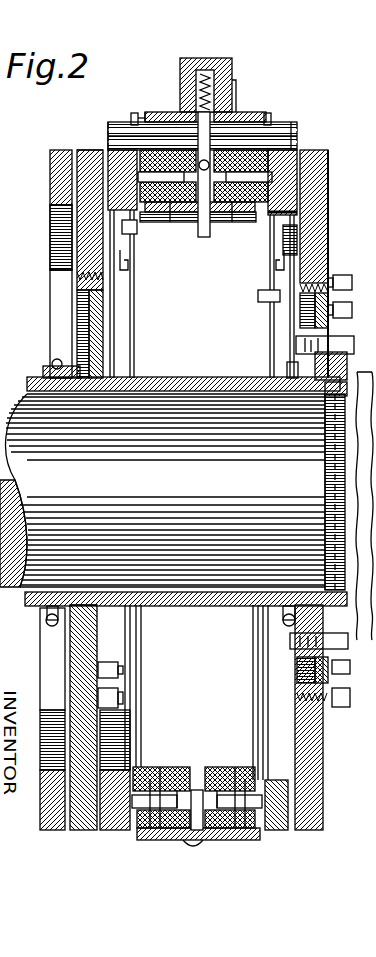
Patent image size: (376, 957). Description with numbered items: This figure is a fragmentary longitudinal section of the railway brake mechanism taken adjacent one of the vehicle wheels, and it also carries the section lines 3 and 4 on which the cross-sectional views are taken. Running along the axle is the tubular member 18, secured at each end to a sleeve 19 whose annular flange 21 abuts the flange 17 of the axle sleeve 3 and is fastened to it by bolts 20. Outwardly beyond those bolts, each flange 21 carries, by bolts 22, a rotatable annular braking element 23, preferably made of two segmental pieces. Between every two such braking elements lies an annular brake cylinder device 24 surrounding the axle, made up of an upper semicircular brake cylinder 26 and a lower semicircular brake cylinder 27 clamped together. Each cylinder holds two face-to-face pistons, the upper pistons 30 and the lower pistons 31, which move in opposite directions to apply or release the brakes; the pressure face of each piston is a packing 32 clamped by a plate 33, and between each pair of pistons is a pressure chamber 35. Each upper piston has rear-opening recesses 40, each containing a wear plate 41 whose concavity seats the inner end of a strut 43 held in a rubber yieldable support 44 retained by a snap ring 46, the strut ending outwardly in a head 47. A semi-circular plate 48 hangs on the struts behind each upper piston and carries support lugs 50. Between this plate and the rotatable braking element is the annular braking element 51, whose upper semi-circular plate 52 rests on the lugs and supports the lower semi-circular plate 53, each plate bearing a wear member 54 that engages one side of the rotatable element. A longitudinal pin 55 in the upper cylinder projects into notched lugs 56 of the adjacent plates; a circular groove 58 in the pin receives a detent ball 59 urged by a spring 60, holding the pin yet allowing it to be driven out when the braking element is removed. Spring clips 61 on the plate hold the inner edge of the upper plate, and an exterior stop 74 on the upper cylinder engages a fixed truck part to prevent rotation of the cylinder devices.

The sleeve 3 is at (263, 112).
The section line 4- 4 is at (305, 150).
The flange 17 is at (348, 647).
The member 18 is at (178, 392).
The sleeve 19 is at (85, 392).
The bolts 20 is at (340, 346).
The annular flange 21 is at (75, 322).
The bolts 22 is at (352, 292).
The annular braking element 23 is at (80, 193).
The annular brake cylinder device 24 is at (134, 113).
The upper semicircular brake cylinder 26 is at (150, 113).
The lower semicircular brake cylinder 27 is at (185, 790).
The pistons 30 is at (202, 136).
The pistons 31 is at (150, 780).
The packing 32 is at (202, 135).
The plate 33 is at (192, 213).
The chamber 35 is at (204, 238).
The recesses 40 is at (178, 226).
The bearing or wear plate 41 is at (170, 213).
The strut 43 is at (140, 168).
The yieldable support 44 is at (330, 162).
The snap ring 46 is at (147, 177).
The head 47 is at (110, 196).
The semi-circular plate 48 is at (150, 195).
The support lugs 50 is at (122, 232).
The annular braking element 51 is at (117, 242).
The upper semi-circular plate 52 is at (107, 212).
The lower semi-circular plate 53 is at (262, 628).
The wear member 54 is at (50, 167).
The pin 55 is at (108, 128).
The lug 56 is at (130, 116).
The circular groove 58 is at (228, 96).
The ball 59 is at (176, 116).
The spring 60 is at (183, 84).
The spring clips 61 is at (200, 263).
The exterior stop 74 is at (185, 60).